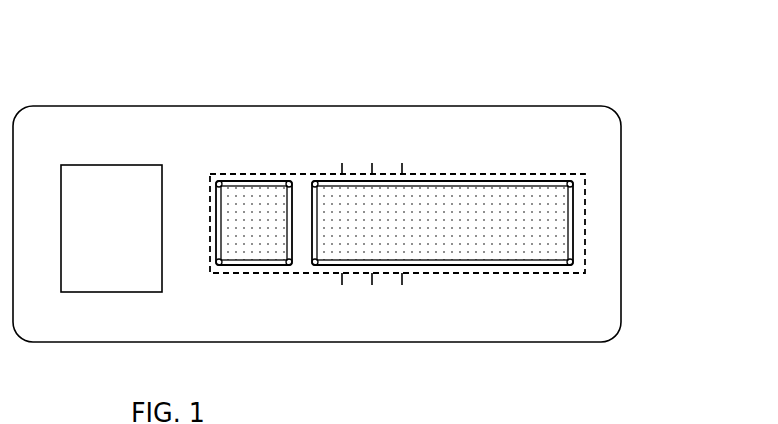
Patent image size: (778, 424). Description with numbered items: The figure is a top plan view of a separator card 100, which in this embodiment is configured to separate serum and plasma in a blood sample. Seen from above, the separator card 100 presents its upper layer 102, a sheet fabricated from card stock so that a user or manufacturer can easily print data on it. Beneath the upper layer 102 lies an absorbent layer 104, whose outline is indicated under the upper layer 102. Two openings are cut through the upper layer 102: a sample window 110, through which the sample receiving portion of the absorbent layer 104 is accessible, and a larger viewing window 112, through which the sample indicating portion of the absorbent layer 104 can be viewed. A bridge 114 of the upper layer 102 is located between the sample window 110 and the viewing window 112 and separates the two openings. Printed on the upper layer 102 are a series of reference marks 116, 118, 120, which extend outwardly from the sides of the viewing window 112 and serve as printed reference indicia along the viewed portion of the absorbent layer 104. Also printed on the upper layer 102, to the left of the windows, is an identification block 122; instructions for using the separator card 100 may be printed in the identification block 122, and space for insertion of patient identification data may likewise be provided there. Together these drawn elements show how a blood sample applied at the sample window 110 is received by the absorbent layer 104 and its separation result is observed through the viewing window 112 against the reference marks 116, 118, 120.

The separator card 100 is at (650, 67).
The upper layer 102 is at (621, 262).
The absorbent layer 104 is at (555, 174).
The sample window 110 is at (249, 183).
The viewing window 112 is at (573, 213).
The bridge 114 is at (318, 186).
The reference mark 116 is at (342, 285).
The reference mark 118 is at (372, 168).
The reference mark 120 is at (402, 283).
The identification block 122 is at (116, 165).